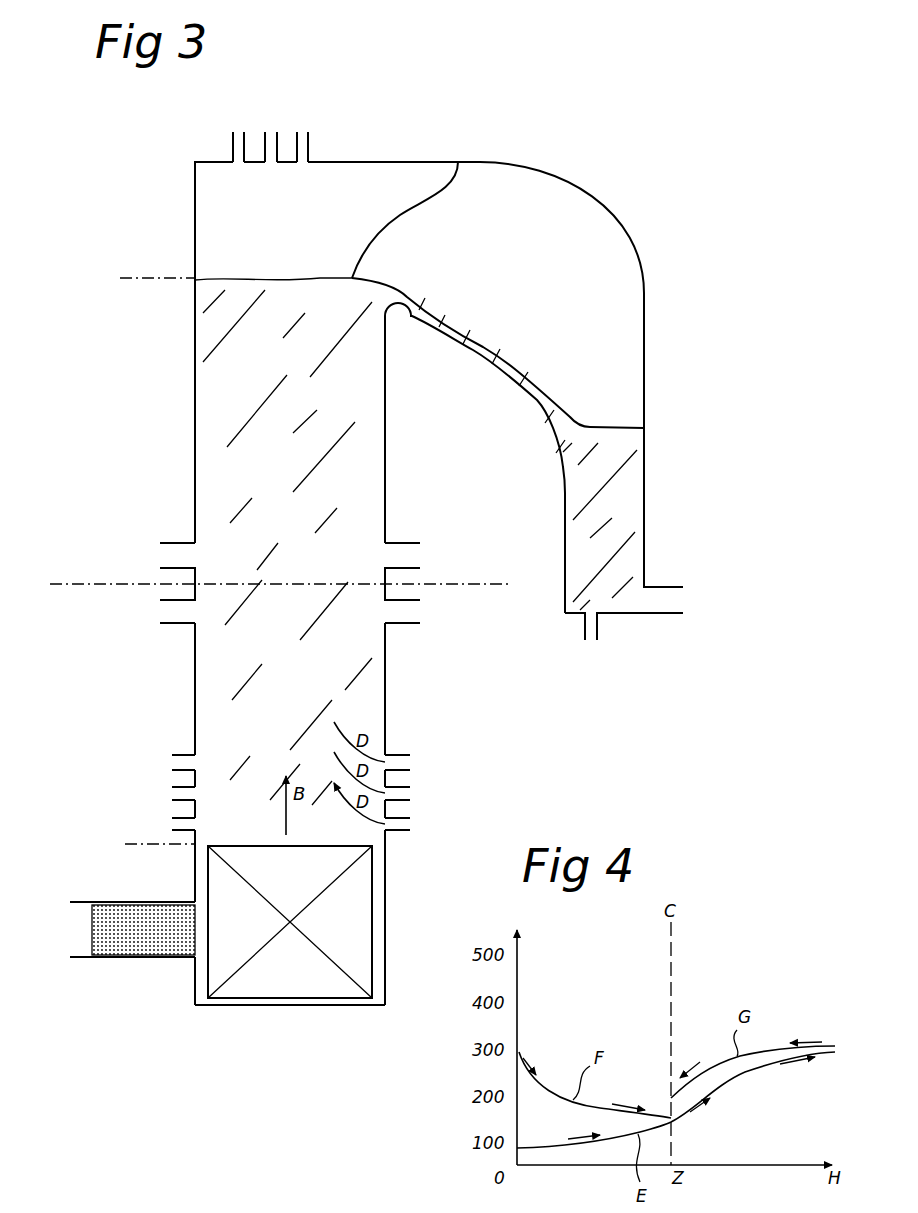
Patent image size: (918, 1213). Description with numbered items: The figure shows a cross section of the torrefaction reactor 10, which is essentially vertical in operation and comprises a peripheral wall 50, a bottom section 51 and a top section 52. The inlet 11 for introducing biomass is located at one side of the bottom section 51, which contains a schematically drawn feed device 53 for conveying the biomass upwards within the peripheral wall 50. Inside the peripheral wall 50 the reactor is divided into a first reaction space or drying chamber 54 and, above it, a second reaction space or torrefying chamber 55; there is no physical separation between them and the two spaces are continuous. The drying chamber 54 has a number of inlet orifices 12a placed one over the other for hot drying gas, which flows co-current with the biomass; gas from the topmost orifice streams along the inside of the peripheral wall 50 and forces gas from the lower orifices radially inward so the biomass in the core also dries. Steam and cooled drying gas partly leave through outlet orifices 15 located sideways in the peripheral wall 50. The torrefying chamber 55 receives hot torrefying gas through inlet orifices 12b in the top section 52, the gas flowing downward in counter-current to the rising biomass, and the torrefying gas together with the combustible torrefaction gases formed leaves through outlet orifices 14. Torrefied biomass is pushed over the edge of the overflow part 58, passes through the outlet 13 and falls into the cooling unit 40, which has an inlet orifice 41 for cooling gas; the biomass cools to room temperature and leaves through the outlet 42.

The torrefaction reactor 10 is at (140, 176).
The inlet 11 is at (90, 957).
The inlet orifices 12a is at (178, 825).
The inlet orifices 12b is at (302, 132).
The outlet 13 is at (458, 162).
The outlet orifices 14 is at (180, 556).
The outlet orifices 15 is at (168, 615).
The cooling unit 40 is at (612, 470).
The inlet orifice 41 is at (598, 630).
The outlet 42 is at (672, 590).
The peripheral wall 50 is at (195, 407).
The bottom section 51 is at (385, 915).
The top section 52 is at (366, 162).
The feed device 53 is at (296, 968).
The drying chamber 54 is at (240, 708).
The torrefying chamber 55 is at (228, 468).
The overflow part 58 is at (402, 322).